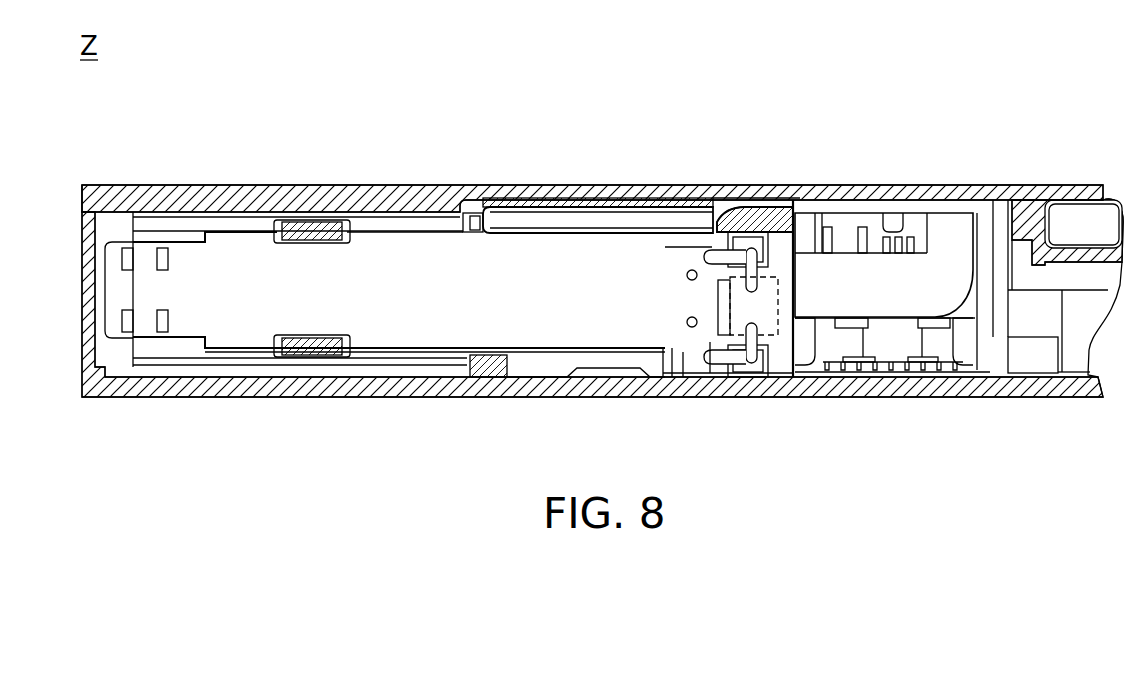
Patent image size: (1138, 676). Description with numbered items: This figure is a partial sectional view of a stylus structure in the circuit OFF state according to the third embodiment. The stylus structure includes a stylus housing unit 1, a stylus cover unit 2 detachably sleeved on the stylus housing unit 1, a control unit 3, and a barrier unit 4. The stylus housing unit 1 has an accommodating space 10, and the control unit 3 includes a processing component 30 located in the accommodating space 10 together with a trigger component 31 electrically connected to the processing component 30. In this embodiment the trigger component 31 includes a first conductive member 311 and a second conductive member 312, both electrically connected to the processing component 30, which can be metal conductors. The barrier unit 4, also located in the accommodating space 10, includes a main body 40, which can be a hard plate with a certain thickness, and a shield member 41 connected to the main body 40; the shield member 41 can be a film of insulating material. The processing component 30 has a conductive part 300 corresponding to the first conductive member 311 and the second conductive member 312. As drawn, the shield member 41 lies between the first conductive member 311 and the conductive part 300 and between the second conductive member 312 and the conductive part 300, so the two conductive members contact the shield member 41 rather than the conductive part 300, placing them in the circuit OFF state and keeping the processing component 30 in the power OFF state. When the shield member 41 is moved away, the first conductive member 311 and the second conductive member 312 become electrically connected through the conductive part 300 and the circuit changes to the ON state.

The stylus housing unit 1 is at (1023, 393).
The stylus cover unit 2 is at (300, 183).
The control unit 3 is at (738, 142).
The barrier unit 4 is at (938, 446).
The accommodating space 10 is at (627, 368).
The processing component 30 is at (634, 248).
The trigger component 31 is at (736, 246).
The main body 40 is at (898, 312).
The shield member 41 is at (792, 300).
The conductive part 300 is at (723, 316).
The first conductive member 311 is at (757, 257).
The second conductive member 312 is at (753, 355).